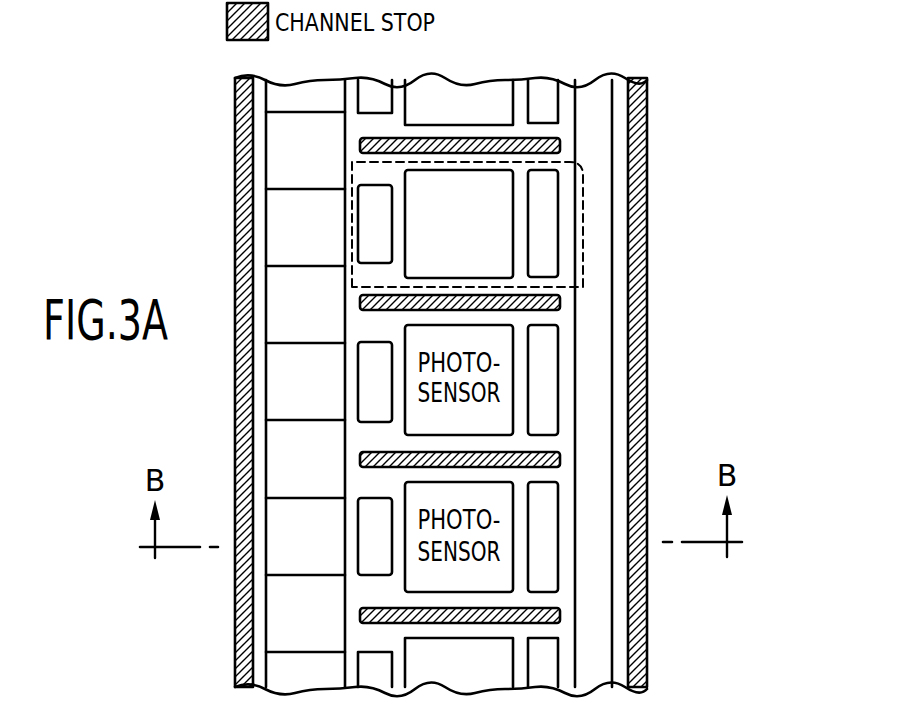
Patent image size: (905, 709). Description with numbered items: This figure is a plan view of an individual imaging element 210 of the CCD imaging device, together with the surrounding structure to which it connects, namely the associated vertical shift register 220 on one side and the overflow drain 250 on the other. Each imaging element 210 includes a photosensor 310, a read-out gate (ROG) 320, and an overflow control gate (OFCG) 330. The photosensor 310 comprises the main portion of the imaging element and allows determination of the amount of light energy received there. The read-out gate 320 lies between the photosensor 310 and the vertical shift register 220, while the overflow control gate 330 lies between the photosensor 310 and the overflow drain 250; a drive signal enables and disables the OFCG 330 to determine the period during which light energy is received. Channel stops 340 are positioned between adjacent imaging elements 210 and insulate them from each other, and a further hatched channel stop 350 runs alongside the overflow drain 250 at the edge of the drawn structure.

The vertical shift register 220 is at (302, 95).
The imaging element 210 is at (583, 162).
The read-out gate 320 is at (374, 222).
The photosensor 310 is at (440, 266).
The overflow control gate 330 is at (540, 223).
The channel stop 340 is at (560, 299).
The channel stop 350 is at (640, 362).
The overflow drain 250 is at (593, 427).